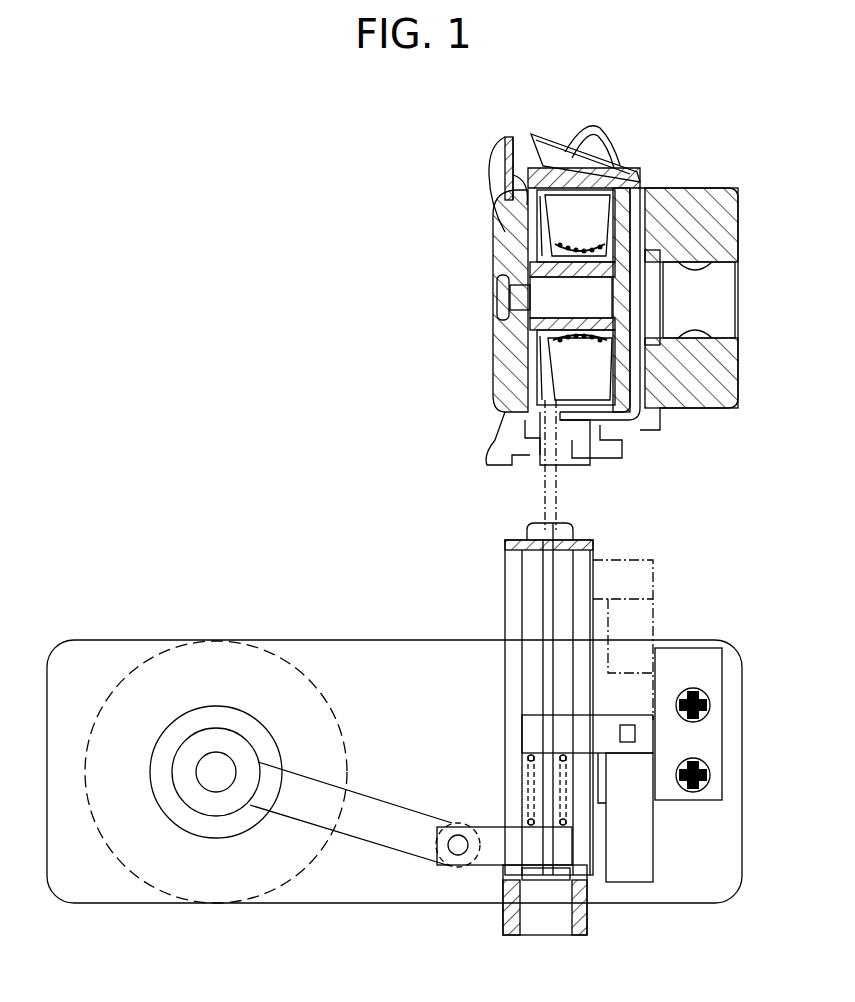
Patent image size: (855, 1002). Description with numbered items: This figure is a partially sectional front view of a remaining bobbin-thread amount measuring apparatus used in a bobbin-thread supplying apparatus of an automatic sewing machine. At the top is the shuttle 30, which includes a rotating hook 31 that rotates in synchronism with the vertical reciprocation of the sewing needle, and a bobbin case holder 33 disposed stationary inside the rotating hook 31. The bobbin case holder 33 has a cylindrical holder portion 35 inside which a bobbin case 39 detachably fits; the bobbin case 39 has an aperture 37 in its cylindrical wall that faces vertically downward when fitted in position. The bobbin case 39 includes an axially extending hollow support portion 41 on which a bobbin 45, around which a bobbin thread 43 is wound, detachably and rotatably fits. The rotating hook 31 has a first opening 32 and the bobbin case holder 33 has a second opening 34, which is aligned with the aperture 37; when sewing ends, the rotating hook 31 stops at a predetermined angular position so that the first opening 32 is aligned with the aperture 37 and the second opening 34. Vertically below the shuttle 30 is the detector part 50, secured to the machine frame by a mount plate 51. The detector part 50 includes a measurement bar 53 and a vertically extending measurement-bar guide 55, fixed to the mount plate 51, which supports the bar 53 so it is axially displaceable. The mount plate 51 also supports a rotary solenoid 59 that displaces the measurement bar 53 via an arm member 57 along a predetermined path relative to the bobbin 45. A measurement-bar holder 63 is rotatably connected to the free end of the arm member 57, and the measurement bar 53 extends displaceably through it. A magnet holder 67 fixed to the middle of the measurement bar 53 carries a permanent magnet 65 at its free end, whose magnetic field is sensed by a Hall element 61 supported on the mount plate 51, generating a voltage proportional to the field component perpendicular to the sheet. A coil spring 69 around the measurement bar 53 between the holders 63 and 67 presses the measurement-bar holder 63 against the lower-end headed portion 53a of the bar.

The shuttle 30 is at (467, 300).
The rotating hook 31 is at (650, 435).
The first opening 32 is at (562, 457).
The bobbin case holder 33 is at (605, 455).
The second opening 34 is at (545, 452).
The cylindrical holder portion 35 is at (532, 214).
The aperture 37 is at (540, 428).
The bobbin case 39 is at (510, 378).
The hollow support portion 41 is at (520, 345).
The bobbin thread 43 is at (560, 244).
The bobbin 45 is at (562, 264).
The detector part 50 is at (202, 538).
The mount plate 51 is at (700, 903).
The measurement bar 53 is at (550, 622).
The lower-end headed portion 53a is at (550, 880).
The measurement-bar guide 55 is at (588, 912).
The arm member 57 is at (372, 833).
The rotary solenoid 59 is at (290, 895).
The Hall element 61 is at (636, 734).
The measurement-bar holder 63 is at (490, 852).
The permanent magnet 65 is at (645, 835).
The magnet holder 67 is at (560, 733).
The coil spring 69 is at (526, 760).